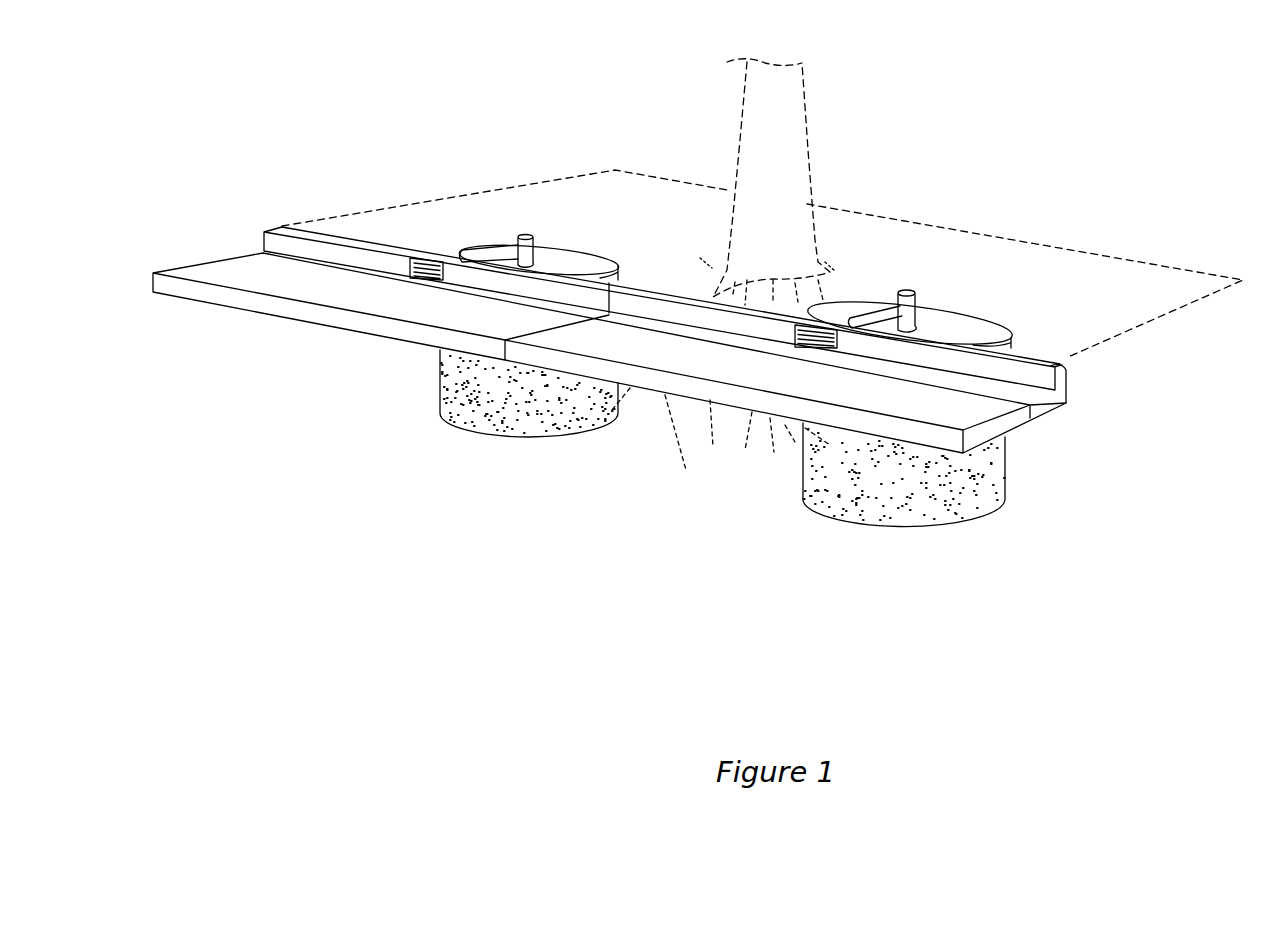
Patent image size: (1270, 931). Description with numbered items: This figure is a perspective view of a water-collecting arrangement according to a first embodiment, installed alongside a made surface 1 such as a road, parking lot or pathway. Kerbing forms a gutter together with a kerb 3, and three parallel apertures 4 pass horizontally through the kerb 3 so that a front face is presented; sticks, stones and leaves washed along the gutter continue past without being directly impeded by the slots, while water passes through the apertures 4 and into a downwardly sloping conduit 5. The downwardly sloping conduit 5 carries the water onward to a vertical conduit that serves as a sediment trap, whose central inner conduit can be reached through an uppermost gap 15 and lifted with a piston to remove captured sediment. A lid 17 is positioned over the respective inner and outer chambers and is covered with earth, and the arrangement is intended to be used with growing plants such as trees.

The made surface 1 is at (407, 333).
The kerb 3 is at (850, 282).
The apertures 4 is at (857, 347).
The downwardly sloping conduit 5 is at (950, 283).
The uppermost gap 15 is at (922, 262).
The lid 17 is at (1017, 307).